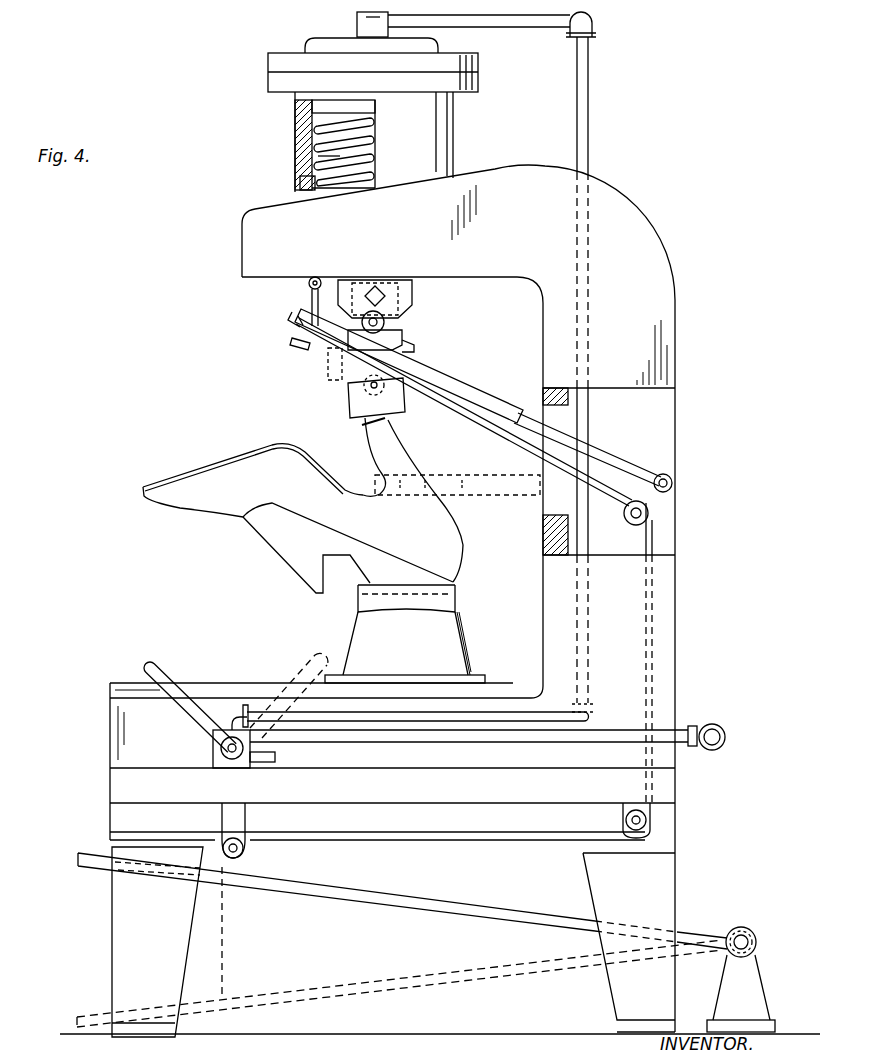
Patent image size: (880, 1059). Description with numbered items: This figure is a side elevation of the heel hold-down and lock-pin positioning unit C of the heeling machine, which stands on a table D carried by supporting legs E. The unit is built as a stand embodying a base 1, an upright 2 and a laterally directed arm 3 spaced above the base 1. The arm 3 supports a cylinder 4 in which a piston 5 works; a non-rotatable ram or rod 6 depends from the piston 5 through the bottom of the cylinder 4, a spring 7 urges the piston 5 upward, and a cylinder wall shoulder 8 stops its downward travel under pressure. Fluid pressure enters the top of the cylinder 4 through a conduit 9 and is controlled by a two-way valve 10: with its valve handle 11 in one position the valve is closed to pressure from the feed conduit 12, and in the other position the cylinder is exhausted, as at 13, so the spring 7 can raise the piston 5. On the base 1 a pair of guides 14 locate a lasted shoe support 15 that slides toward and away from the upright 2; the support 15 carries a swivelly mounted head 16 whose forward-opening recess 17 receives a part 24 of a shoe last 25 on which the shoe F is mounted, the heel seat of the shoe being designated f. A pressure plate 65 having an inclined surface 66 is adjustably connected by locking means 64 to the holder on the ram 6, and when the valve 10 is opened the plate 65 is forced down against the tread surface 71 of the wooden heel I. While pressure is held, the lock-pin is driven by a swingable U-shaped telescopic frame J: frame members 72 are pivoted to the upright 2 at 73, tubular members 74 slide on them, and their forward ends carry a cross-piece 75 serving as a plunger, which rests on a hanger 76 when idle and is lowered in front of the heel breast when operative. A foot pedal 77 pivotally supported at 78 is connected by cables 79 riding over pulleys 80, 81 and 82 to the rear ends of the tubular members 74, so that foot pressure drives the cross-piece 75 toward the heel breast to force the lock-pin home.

The base 1 is at (110, 735).
The upright 2 is at (545, 545).
The laterally directed arm 3 is at (240, 262).
The cylinder 4 is at (445, 118).
The piston 5 is at (300, 109).
The ram or rod 6 is at (330, 130).
The spring 7 is at (318, 156).
The cylinder wall shoulder 8 is at (300, 178).
The conduit 9 is at (582, 84).
The two-way valve 10 is at (213, 752).
The valve handle 11 is at (168, 676).
The feed conduit 12 is at (705, 722).
The exhaust 13 is at (275, 757).
The guides 14 is at (233, 683).
The lasted shoe support 15 is at (352, 640).
The swivelly mounted head 16 is at (358, 604).
The recess 17 is at (393, 602).
The part of shoe last 24 is at (406, 574).
The shoe last 25 is at (290, 537).
The locking means 64 is at (384, 320).
The pressure plate 65 is at (402, 334).
The inclined surface 66 is at (414, 349).
The tread surface 71 is at (392, 430).
The frame members 72 is at (596, 452).
The pivot 73 is at (672, 481).
The tubular members 74 is at (466, 390).
The cross-piece 75 is at (297, 320).
The hanger 76 is at (292, 344).
The foot pedal 77 is at (438, 985).
The pivot of foot pedal 78 is at (410, 496).
The cables 79 is at (502, 838).
The pulley 80 is at (250, 856).
The pulley 81 is at (652, 825).
The pulley 82 is at (648, 516).
The heel hold-down and lock-pin positioning unit C is at (412, 296).
The table D is at (110, 790).
The supporting legs E is at (112, 826).
The shoe F is at (291, 481).
The wooden heel I is at (400, 455).
The swingable U-shaped telescopic frame J is at (515, 402).
The heel seat f is at (438, 509).